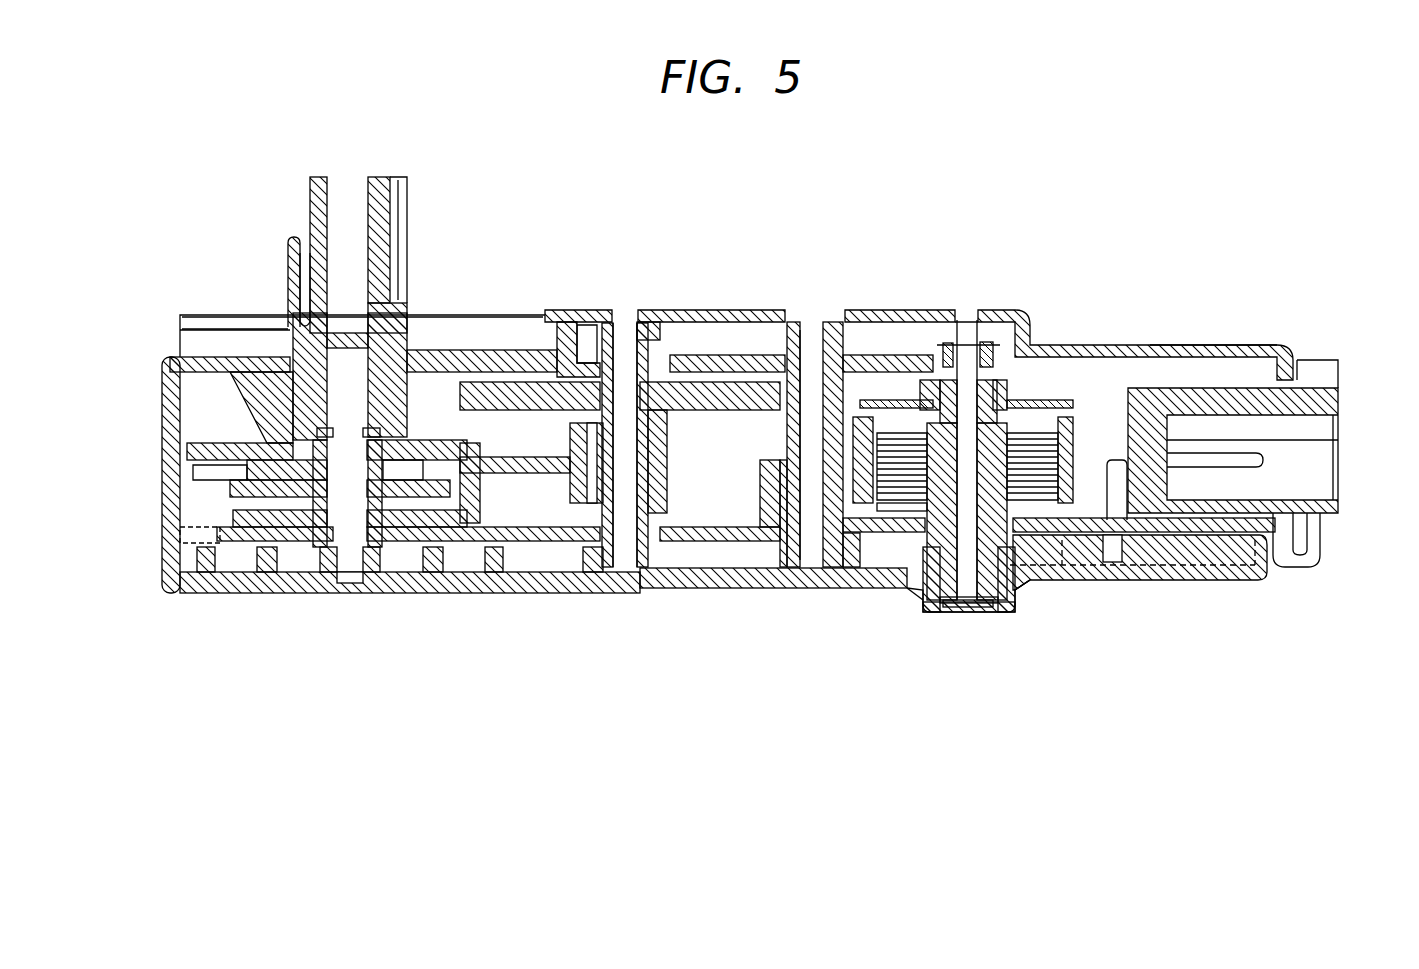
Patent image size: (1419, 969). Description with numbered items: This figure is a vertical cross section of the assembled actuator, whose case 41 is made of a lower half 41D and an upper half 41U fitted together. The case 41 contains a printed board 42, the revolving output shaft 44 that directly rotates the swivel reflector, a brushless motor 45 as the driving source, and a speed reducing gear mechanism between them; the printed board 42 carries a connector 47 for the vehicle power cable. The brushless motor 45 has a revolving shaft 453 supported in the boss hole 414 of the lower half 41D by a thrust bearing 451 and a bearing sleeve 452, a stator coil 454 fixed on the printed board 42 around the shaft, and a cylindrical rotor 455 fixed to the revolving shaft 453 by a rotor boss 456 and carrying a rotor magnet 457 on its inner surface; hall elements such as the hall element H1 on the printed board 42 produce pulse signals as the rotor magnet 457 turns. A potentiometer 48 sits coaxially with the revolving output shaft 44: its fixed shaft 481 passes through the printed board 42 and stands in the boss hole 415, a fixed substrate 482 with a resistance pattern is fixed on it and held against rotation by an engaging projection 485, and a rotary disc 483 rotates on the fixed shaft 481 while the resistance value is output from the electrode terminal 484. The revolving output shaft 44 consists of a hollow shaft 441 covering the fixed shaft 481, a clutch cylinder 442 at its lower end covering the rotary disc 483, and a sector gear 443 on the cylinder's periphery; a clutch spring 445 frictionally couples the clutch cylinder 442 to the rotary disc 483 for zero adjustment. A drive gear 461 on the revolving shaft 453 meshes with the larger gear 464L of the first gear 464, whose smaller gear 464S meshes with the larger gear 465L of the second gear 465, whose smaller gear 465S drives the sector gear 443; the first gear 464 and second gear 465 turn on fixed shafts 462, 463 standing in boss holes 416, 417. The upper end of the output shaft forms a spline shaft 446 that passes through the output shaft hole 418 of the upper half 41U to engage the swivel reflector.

The case 41 is at (1300, 320).
The upper half 41U is at (1213, 337).
The lower half 41D is at (1260, 580).
The printed board 42 is at (735, 535).
The revolving output shaft 44 is at (300, 205).
The brushless motor 45 is at (1075, 383).
The connector 47 is at (1340, 398).
The potentiometer 48 is at (180, 510).
The boss hole 414 is at (913, 603).
The boss hole 415 is at (300, 593).
The boss hole 416 is at (777, 560).
The boss hole 417 is at (590, 560).
The output shaft hole 418 is at (405, 352).
The hollow shaft 441 is at (290, 330).
The clutch cylinder 442 is at (205, 437).
The sector gear 443 is at (612, 340).
The clutch spring 445 is at (495, 390).
The spline shaft 446 is at (398, 238).
The thrust bearing 451 is at (973, 612).
The bearing sleeve 452 is at (1023, 592).
The revolving shaft 453 is at (963, 612).
The stator coil 454 is at (1085, 395).
The rotor 455 is at (895, 400).
The rotor boss 456 is at (1060, 400).
The rotor magnet 457 is at (870, 520).
The drive gear 461 is at (1002, 325).
The fixed shaft 462 is at (770, 525).
The fixed shaft 463 is at (655, 340).
The first gear 464 is at (858, 335).
The larger gear 464L is at (775, 480).
The smaller gear 464S is at (845, 385).
The second gear 465 is at (533, 390).
The larger gear 465L is at (722, 380).
The smaller gear 465S is at (665, 530).
The fixed shaft 481 is at (347, 357).
The fixed substrate 482 is at (398, 560).
The rotary disc 483 is at (262, 440).
The electrode terminal 484 is at (540, 548).
The engaging projection 485 is at (190, 597).
The hall element H1 is at (1093, 580).